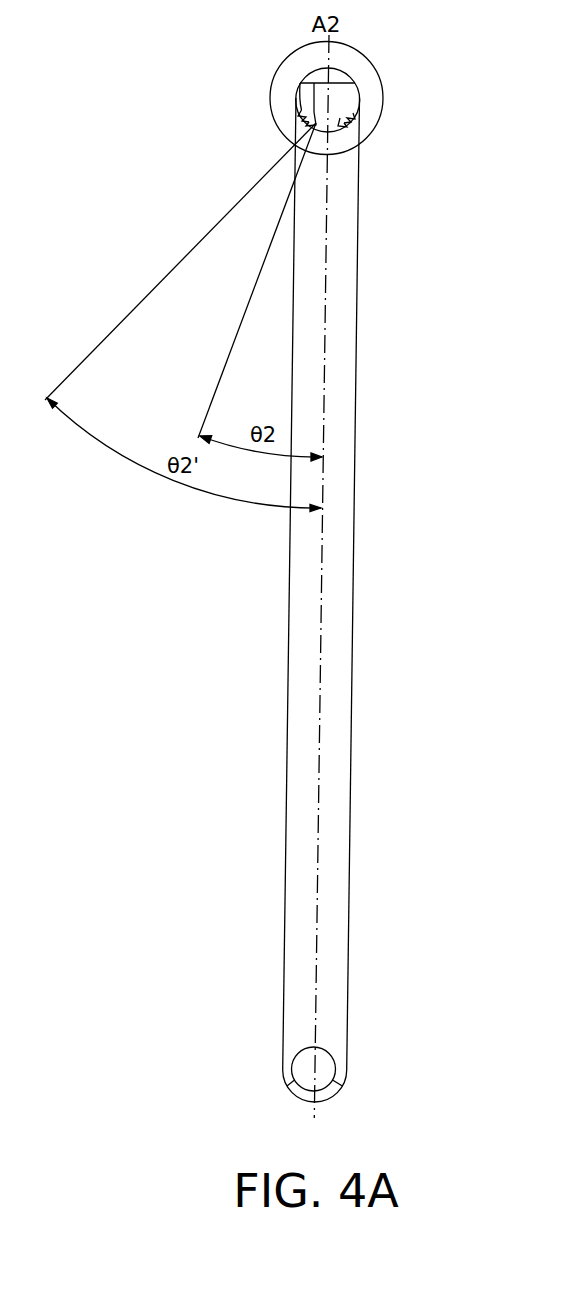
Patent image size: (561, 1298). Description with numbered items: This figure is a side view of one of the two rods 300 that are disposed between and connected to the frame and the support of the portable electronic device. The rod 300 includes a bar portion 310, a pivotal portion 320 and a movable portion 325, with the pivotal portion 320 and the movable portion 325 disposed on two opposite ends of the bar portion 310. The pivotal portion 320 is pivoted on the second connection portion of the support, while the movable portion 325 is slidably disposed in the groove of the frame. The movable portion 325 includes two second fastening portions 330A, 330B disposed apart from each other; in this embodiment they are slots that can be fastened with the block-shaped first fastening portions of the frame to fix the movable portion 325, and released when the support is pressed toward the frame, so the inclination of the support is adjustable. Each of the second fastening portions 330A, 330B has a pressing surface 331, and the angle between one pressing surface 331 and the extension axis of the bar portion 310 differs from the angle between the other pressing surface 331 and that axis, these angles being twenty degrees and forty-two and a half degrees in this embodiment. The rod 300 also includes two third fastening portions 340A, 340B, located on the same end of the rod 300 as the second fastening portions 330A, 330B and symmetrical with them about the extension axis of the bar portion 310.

The rod 300 is at (146, 40).
The bar portion 310 is at (337, 573).
The pivotal portion 320 is at (327, 1068).
The movable portion 325 is at (345, 95).
The pressing surface 331 is at (307, 110).
The second fastening portion 330A is at (303, 139).
The second fastening portion 330B is at (288, 129).
The third fastening portion 340A is at (351, 144).
The third fastening portion 340B is at (363, 128).